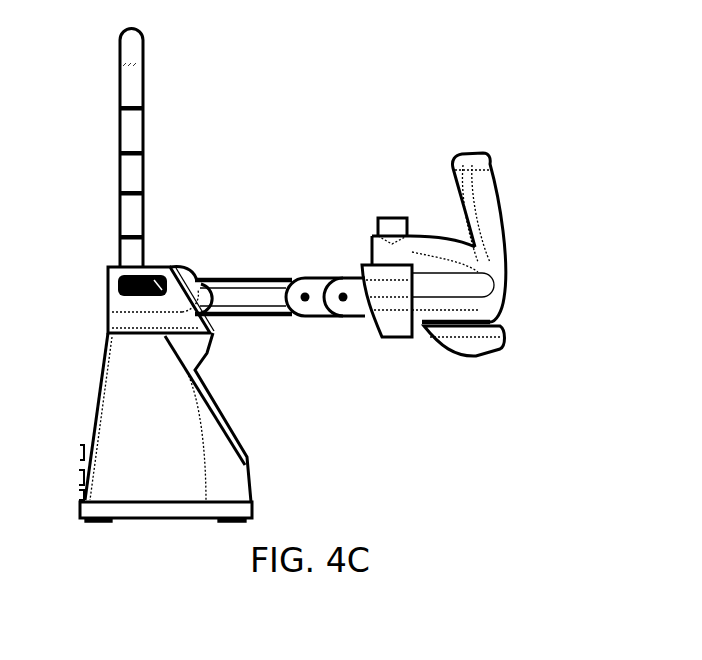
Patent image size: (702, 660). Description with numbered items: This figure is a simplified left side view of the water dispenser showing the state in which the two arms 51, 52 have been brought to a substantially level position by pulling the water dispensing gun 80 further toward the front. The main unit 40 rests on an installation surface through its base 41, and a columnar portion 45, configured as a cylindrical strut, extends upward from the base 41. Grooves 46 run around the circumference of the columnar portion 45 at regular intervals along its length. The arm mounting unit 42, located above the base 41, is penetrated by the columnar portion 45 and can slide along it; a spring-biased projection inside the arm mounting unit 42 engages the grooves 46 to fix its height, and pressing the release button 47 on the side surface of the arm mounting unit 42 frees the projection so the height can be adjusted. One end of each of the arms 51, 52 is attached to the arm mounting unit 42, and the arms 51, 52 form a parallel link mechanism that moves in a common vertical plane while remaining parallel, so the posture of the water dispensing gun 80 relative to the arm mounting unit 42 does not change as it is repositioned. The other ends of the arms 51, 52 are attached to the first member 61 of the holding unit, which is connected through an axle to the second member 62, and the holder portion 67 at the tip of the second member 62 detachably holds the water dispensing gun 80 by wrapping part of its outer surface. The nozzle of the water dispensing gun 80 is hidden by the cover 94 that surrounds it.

The main unit 40 is at (286, 126).
The base 41 is at (112, 377).
The arm mounting unit 42 is at (113, 306).
The columnar portion 45 is at (128, 133).
The grooves 46 is at (121, 153).
The release button 47 is at (112, 277).
The arm 51 is at (262, 318).
The arm 52 is at (240, 277).
The first member 61 is at (306, 282).
The second member 62 is at (346, 282).
The holder portion 67 is at (398, 331).
The water dispensing gun 80 is at (414, 173).
The cover 94 is at (497, 347).